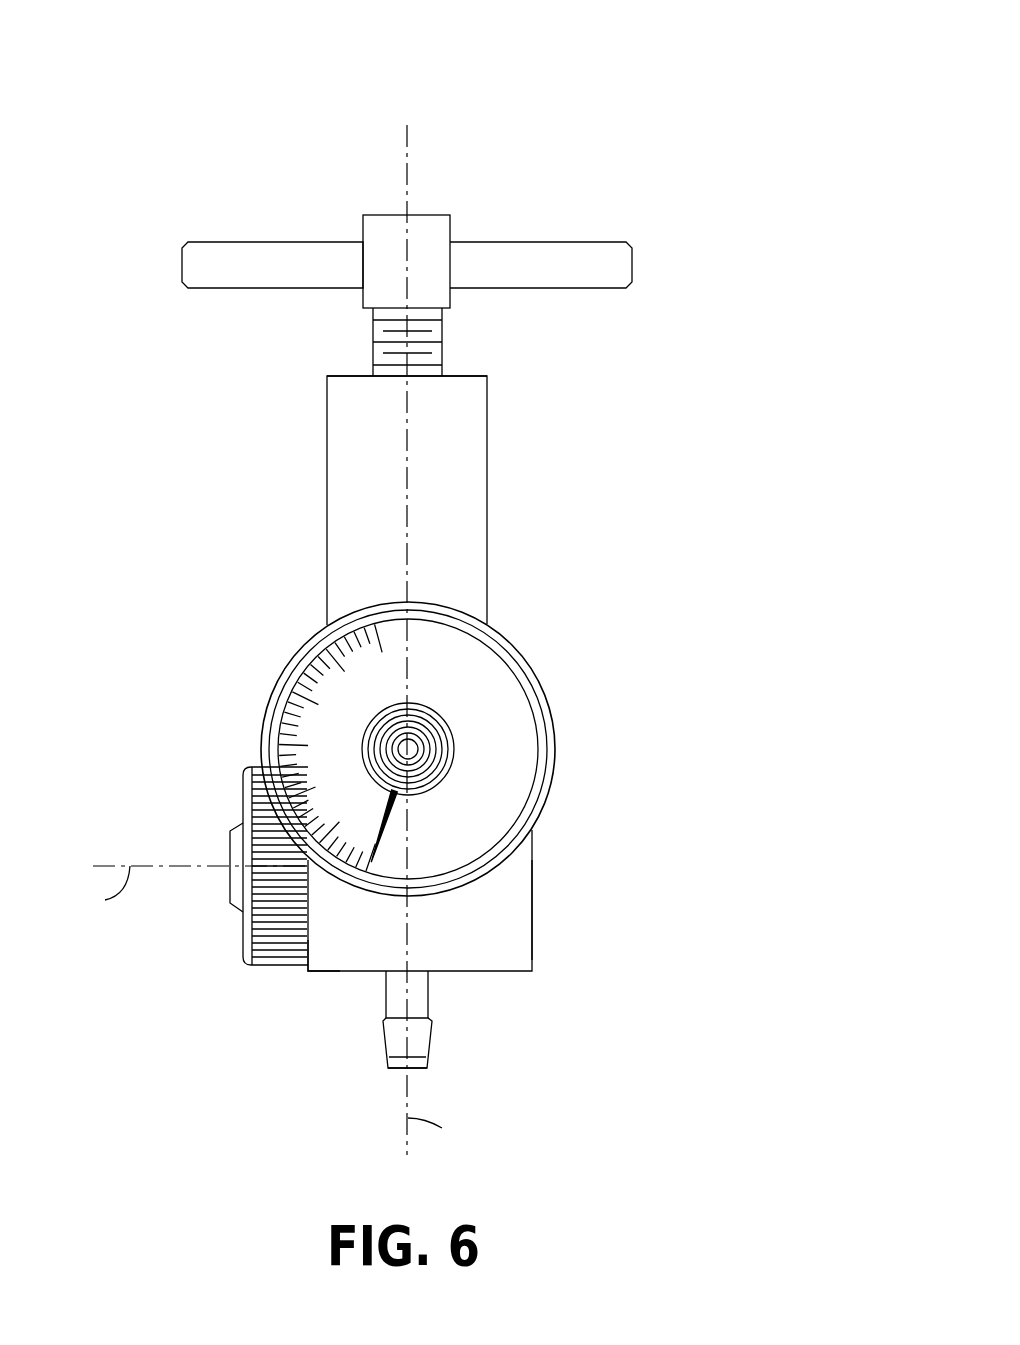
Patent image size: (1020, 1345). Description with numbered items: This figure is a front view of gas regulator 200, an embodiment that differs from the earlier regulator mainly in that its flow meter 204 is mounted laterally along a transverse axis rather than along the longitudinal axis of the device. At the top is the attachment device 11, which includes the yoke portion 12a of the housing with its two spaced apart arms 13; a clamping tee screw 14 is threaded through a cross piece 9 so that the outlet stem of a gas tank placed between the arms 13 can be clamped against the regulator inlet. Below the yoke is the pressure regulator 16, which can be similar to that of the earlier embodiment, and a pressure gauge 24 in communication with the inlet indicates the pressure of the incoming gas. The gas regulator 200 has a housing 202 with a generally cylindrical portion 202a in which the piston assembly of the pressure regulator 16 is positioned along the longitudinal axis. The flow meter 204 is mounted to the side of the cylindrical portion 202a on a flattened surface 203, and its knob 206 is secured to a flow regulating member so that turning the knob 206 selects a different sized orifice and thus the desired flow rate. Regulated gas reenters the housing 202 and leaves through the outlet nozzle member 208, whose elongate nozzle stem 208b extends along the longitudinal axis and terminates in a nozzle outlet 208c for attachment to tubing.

The gas regulator 200 is at (512, 103).
The clamping tee screw 14 is at (568, 248).
The cross piece 9 is at (460, 387).
The arms 13 is at (477, 458).
The yoke portion 12a is at (475, 515).
The attachment device 11 is at (481, 400).
The pressure gauge 24 is at (488, 668).
The pressure regulator 16 is at (493, 749).
The housing 202 is at (458, 936).
The generally cylindrical portion 202a is at (523, 923).
The flow meter 204 is at (174, 863).
The knob 206 is at (243, 933).
The flattened surface 203 is at (305, 970).
The outlet nozzle member 208 is at (483, 1029).
The nozzle stem 208b is at (420, 1042).
The barb tip 208c is at (382, 1035).